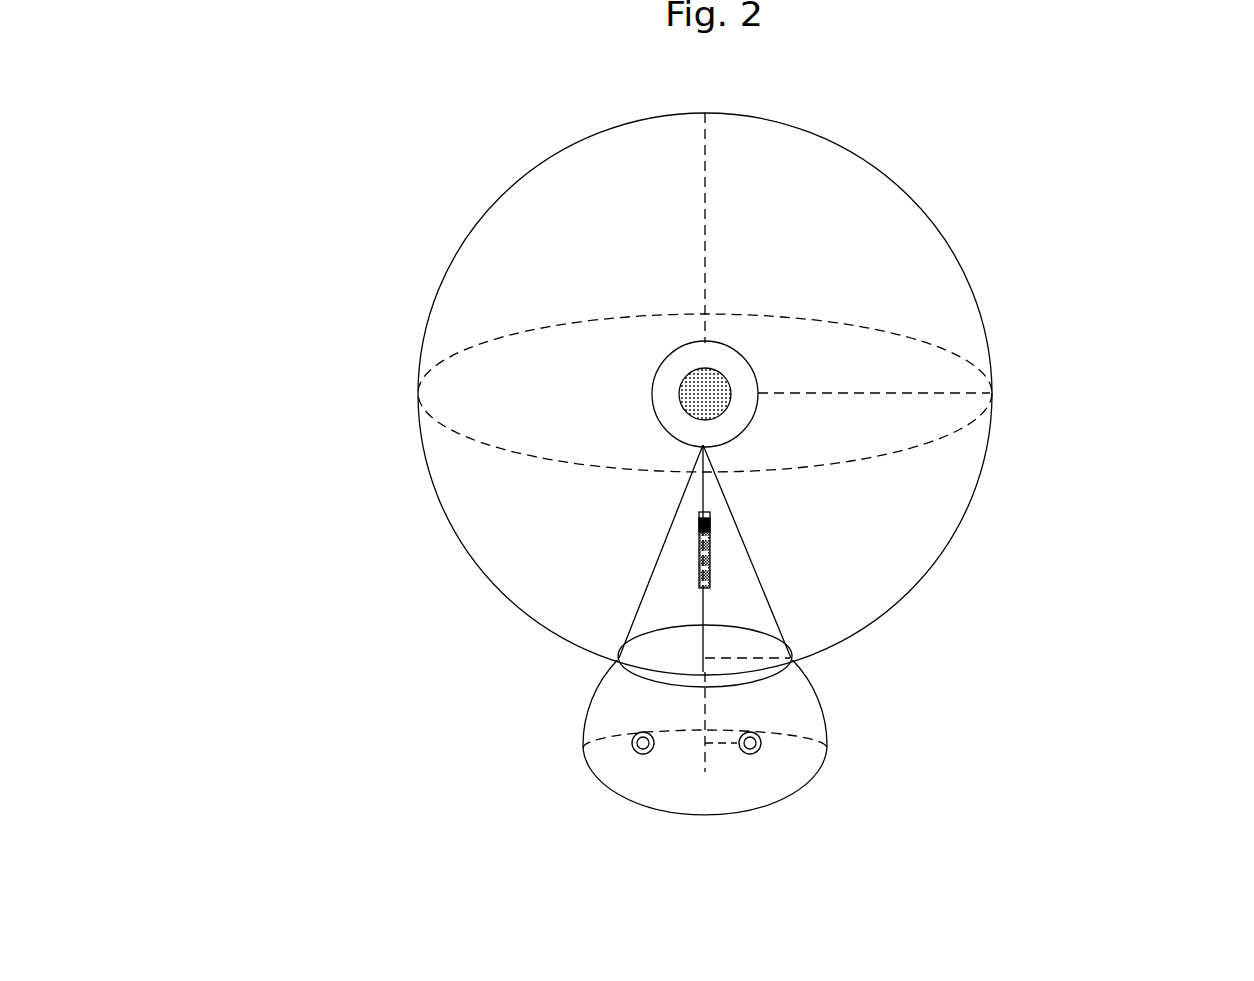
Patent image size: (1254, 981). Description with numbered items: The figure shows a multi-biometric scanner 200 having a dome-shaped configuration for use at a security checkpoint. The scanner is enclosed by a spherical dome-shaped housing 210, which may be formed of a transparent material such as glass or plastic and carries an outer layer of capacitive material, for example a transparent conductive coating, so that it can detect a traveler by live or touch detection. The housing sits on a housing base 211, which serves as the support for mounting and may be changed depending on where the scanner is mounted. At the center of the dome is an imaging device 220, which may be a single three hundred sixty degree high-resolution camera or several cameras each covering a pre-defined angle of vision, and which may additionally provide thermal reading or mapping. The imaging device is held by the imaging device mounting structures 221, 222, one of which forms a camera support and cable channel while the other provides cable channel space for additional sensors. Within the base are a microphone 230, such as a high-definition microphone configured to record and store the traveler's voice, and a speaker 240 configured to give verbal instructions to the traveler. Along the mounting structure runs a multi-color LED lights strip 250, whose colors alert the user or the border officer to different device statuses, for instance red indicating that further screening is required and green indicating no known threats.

The multi-biometric scanner 200 is at (727, 77).
The dome-shaped housing 210 is at (490, 207).
The housing base 211 is at (459, 740).
The imaging device 220 is at (742, 355).
The imaging device mounting structure 221 is at (703, 598).
The imaging device mounting structure 222 is at (760, 577).
The microphone 230 is at (760, 750).
The speaker 240 is at (637, 752).
The multi-color LED lights strip 250 is at (710, 532).